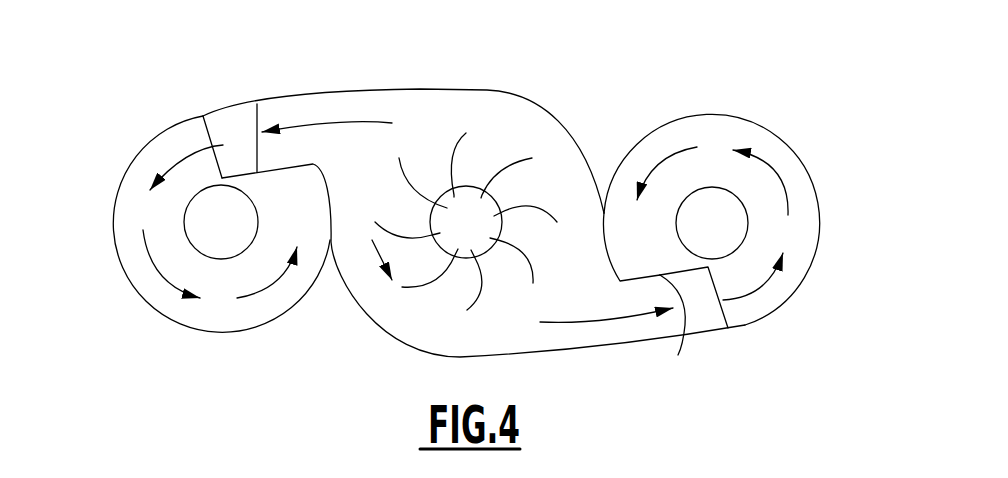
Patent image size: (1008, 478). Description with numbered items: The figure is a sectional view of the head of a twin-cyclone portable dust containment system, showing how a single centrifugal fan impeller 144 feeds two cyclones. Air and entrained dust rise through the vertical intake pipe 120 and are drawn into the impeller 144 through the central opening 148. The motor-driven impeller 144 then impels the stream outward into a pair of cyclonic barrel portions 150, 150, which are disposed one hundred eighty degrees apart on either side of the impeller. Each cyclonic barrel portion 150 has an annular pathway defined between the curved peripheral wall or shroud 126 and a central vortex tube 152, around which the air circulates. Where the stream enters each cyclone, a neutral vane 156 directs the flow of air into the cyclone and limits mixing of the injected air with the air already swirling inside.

The vertical intake pipe 120 is at (457, 90).
The curved peripheral wall 126 is at (715, 114).
The centrifugal fan impeller 144 is at (430, 287).
The central opening 148 is at (500, 195).
The cyclonic barrel portion 150 is at (149, 144).
The central vortex tube 152 is at (184, 222).
The neutral vane 156 is at (257, 112).